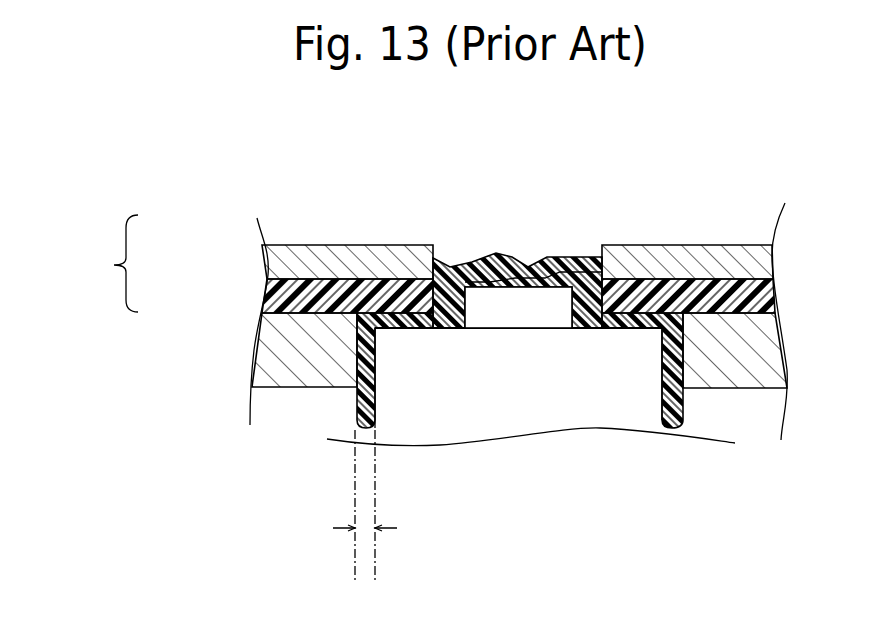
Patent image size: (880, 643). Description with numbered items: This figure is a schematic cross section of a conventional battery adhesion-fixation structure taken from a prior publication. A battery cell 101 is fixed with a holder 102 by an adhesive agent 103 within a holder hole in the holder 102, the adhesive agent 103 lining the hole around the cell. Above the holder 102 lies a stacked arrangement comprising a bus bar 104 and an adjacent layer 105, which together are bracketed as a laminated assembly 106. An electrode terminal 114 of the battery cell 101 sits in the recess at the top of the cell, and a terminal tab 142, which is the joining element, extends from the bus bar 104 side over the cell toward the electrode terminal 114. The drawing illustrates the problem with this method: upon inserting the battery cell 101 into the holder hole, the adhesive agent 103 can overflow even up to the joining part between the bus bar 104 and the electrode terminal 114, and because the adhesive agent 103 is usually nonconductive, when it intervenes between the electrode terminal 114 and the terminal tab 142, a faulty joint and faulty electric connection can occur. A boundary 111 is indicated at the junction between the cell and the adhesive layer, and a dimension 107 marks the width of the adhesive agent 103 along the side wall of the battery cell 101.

The battery cell 101 is at (463, 413).
The holder 102 is at (280, 347).
The adhesive agent 103 is at (672, 421).
The bus bar 104 is at (278, 258).
The intermediate layer 105 is at (278, 298).
The laminated structure 106 is at (95, 263).
The gap width 107 is at (368, 532).
The boundary 111 is at (429, 331).
The electrode terminal 114 is at (540, 310).
The terminal tab 142 is at (560, 258).